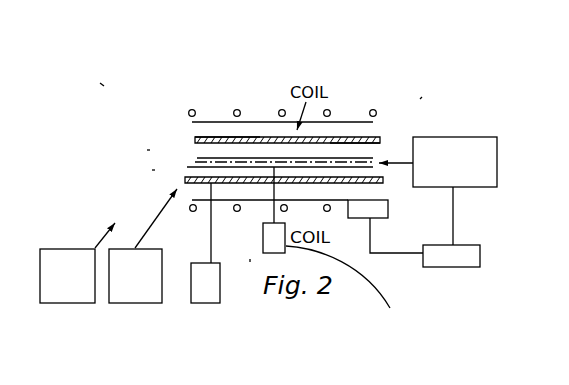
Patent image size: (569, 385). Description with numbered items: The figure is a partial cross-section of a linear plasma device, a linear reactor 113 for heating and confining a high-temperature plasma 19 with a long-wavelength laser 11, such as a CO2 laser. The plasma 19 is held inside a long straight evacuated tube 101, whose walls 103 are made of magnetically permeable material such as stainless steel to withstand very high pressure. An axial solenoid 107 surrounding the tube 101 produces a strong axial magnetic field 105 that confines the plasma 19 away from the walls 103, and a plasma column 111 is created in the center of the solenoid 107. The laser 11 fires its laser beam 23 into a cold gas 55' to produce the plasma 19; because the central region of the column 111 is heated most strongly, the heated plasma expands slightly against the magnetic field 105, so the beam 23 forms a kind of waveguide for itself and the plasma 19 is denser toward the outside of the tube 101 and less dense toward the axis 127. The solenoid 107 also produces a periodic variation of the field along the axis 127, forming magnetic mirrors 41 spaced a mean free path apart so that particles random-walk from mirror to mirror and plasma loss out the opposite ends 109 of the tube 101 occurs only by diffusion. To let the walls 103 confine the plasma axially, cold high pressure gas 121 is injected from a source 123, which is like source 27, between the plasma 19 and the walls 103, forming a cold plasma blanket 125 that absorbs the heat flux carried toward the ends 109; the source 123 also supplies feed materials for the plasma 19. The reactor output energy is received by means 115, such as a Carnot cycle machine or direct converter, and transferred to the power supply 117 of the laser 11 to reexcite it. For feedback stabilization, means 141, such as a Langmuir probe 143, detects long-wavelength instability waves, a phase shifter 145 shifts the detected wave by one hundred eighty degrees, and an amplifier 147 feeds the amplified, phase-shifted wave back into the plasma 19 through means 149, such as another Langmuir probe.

The long-wavelength laser 11 is at (478, 136).
The plasma 19 is at (329, 161).
The laser beam 23 is at (383, 142).
The source 27 is at (40, 303).
The magnetic mirrors 41 is at (284, 110).
The cold gas 55' is at (97, 160).
The tube 101 is at (200, 134).
The walls 103 is at (257, 118).
The axial magnetic field 105 is at (352, 154).
The axial solenoid 107 is at (377, 113).
The ends 109 is at (422, 97).
The plasma column 111 is at (152, 170).
The linear reactor 113 is at (100, 83).
The means for receiving output energy 115 is at (388, 212).
The power supply 117 is at (458, 267).
The cold high pressure gas 121 is at (162, 214).
The source 123 is at (130, 303).
The cold plasma blanket 125 is at (187, 141).
The axis 127 is at (197, 158).
The means for detecting instability waves 141 is at (250, 262).
The Langmuir probe 143 is at (272, 212).
The phase shifter 145 is at (348, 293).
The amplifier 147 is at (205, 303).
The means for feeding into plasma 149 is at (211, 221).